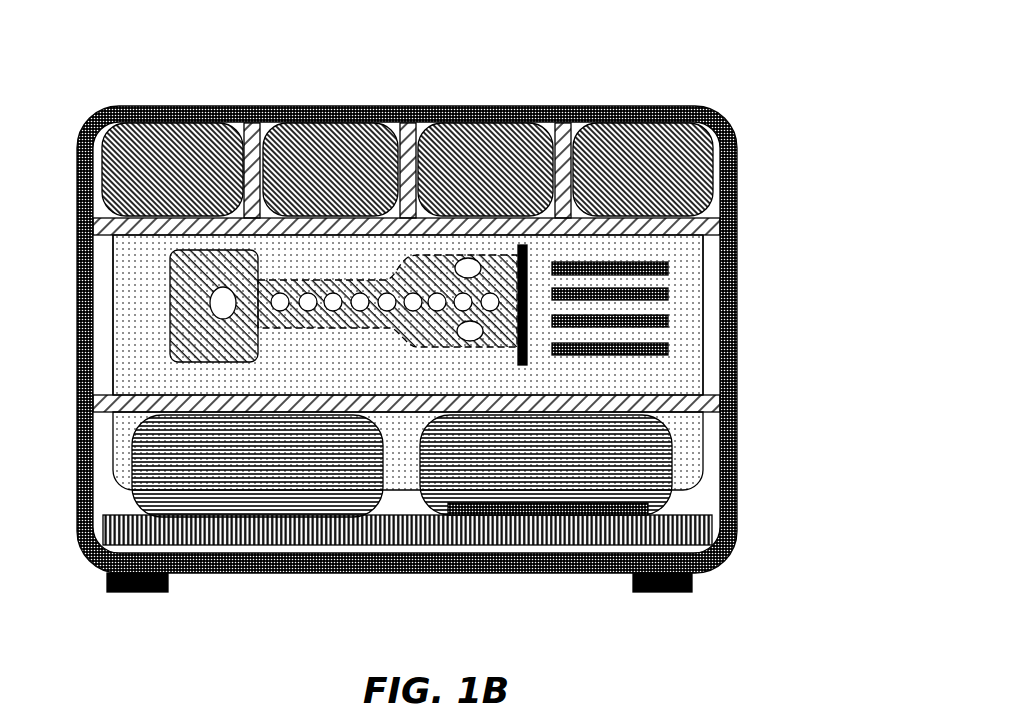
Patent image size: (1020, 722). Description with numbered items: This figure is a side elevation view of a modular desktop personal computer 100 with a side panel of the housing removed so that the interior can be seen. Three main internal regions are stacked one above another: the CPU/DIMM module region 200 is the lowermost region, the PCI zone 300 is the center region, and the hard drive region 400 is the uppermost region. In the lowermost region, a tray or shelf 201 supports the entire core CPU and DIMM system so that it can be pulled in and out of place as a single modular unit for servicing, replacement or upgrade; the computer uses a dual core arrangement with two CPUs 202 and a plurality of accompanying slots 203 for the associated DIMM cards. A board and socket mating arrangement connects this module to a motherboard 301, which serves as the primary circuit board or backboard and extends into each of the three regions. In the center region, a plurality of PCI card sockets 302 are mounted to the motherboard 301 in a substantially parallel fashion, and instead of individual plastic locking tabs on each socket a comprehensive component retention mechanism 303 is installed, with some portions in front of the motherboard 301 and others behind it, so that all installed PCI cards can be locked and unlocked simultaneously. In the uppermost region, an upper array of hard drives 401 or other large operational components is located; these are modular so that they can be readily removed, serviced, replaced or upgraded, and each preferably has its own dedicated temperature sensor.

The personal computer 100 is at (458, 318).
The CPU/DIMM module region 200 is at (472, 523).
The tray 201 is at (392, 533).
The CPU 202 is at (263, 497).
The slot 203 is at (500, 512).
The PCI zone 300 is at (477, 315).
The motherboard 301 is at (348, 372).
The PCI card socket 302 is at (672, 273).
The component retention mechanism 303 is at (170, 327).
The hard drive region 400 is at (471, 127).
The hard drive 401 is at (611, 147).